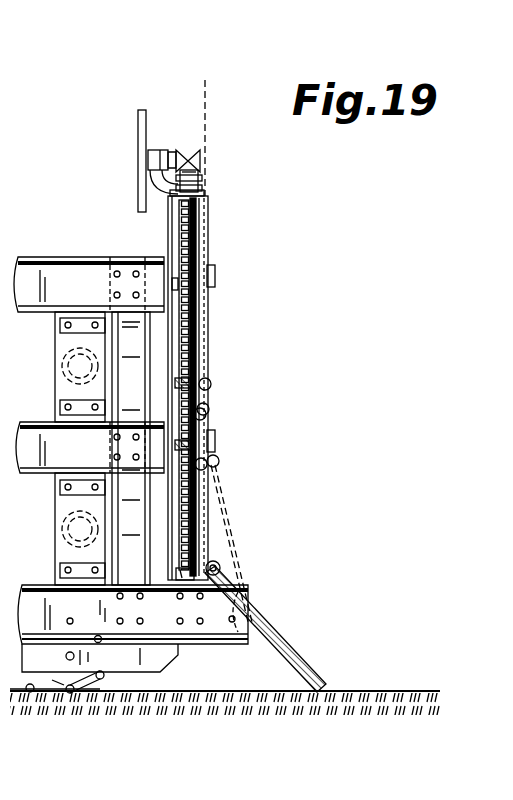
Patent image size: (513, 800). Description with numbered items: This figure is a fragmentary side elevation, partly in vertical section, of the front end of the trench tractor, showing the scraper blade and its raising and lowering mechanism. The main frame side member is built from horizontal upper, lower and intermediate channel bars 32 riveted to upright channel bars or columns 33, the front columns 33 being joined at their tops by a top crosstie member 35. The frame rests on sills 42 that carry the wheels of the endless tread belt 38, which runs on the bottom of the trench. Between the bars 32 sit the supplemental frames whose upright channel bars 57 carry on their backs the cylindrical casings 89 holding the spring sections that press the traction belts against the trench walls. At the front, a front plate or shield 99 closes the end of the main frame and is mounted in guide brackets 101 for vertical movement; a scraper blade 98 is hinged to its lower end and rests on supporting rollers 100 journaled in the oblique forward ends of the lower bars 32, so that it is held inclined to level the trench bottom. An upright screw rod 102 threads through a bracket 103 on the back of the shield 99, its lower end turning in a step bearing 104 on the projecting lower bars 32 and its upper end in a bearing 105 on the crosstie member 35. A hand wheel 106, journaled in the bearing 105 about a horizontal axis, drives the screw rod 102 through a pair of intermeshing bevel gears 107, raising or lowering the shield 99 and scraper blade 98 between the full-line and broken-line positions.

The longitudinally extended channel bars 32 is at (131, 450).
The upright channel bars or columns 33 is at (245, 342).
The top crosstie member 35 is at (168, 202).
The endless tread belt 38 is at (40, 700).
The sills 42 is at (100, 654).
The upright channel bars 57 is at (60, 358).
The cylindrical casings 89 is at (66, 384).
The scraper blade 98 is at (305, 665).
The front plate or shield 99 is at (210, 119).
The supporting rollers 100 is at (262, 626).
The guide brackets 101 is at (216, 276).
The screw rod 102 is at (195, 335).
The bracket 103 is at (213, 232).
The step bearing 104 is at (180, 575).
The bearing 105 is at (203, 190).
The hand wheel 106 is at (140, 183).
The intermeshing bevel gears 107 is at (186, 160).